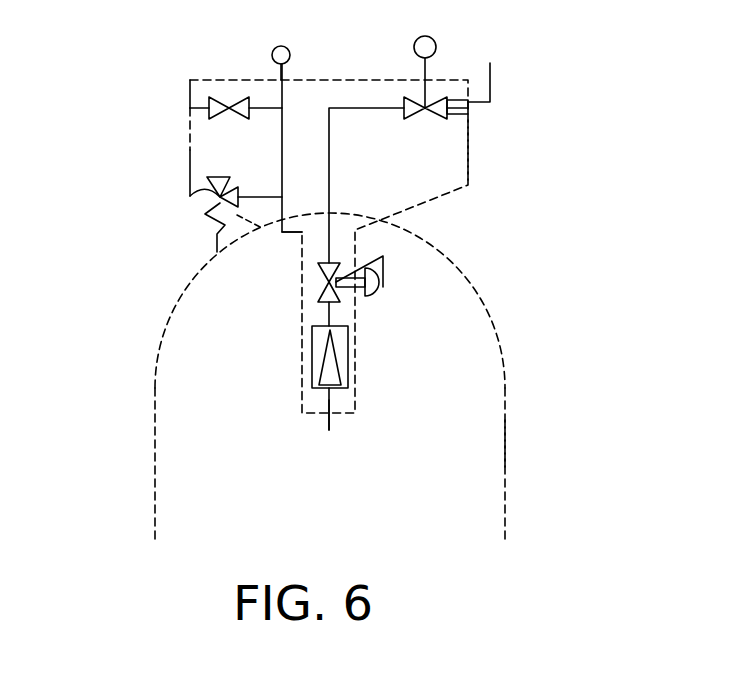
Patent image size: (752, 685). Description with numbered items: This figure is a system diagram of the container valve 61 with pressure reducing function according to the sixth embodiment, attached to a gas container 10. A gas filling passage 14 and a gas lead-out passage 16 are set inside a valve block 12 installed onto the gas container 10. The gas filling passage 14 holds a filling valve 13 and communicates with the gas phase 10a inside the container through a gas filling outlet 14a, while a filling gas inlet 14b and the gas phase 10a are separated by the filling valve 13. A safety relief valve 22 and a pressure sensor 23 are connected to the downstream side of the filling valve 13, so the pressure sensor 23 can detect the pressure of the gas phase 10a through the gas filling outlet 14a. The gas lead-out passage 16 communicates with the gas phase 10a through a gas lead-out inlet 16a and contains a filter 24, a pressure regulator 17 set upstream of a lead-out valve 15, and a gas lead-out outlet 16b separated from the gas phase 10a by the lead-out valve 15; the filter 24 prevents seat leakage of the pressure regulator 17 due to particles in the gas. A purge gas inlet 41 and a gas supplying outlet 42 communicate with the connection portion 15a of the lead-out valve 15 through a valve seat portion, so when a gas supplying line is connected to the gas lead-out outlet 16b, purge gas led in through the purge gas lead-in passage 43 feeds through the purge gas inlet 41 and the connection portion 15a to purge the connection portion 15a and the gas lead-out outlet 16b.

The gas container 10 is at (507, 383).
The gas phase 10a is at (475, 447).
The valve block 12 is at (191, 148).
The filling valve 13 is at (227, 97).
The gas filling passage 14 is at (281, 147).
The gas filling outlet 14a is at (280, 234).
The filling gas inlet 14b is at (191, 108).
The lead-out valve 15 is at (404, 99).
The connection portion 15a is at (470, 108).
The gas lead-out passage 16 is at (353, 110).
The gas lead-out inlet 16a is at (329, 430).
The gas lead-out outlet 16b is at (462, 118).
The pressure regulator 17 is at (340, 292).
The safety relief valve 22 is at (190, 192).
The pressure sensor 23 is at (288, 44).
The purge gas inlet 41 is at (457, 90).
The gas supplying outlet 42 is at (469, 175).
The purge gas lead-in passage 43 is at (495, 76).
The filter 24 is at (312, 368).
The container valve with pressure reducing function 61 is at (439, 206).